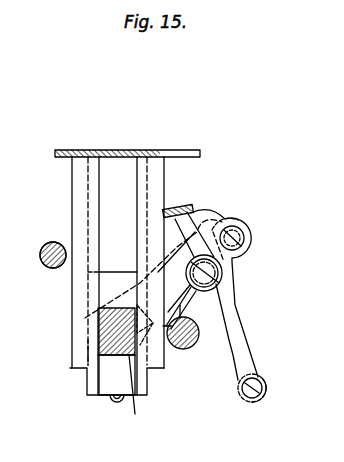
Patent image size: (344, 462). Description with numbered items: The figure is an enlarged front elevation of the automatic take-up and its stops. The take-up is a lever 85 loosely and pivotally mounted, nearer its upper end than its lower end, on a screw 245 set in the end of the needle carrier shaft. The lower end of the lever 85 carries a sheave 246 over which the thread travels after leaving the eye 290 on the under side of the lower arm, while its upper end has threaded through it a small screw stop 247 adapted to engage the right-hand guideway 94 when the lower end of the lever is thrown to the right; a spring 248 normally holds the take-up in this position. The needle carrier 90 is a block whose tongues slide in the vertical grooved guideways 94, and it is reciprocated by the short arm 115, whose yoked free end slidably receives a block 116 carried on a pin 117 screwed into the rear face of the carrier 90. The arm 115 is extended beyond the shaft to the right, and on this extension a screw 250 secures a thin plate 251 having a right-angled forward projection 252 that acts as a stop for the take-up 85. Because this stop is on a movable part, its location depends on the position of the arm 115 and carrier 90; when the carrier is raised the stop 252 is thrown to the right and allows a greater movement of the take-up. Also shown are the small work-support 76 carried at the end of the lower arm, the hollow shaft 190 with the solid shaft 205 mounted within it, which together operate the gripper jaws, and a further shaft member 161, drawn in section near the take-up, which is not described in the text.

The work-support 76 is at (143, 150).
The vertical grooved guideways 94 is at (82, 362).
The block 116 is at (98, 328).
The pin 117 is at (85, 356).
The eye 290 is at (112, 402).
The needle carrier 90 is at (141, 396).
The hollow shaft 190 is at (50, 243).
The solid shaft 205 is at (48, 266).
The shaft 161 is at (197, 357).
The short arm 115 is at (180, 349).
The screw stop 247 is at (193, 212).
The take-up lever 85 is at (240, 320).
The spring 248 is at (230, 298).
The screw 245 is at (220, 273).
The screw 250 is at (247, 235).
The thin plate 251 is at (227, 222).
The right-angled forward projection 252 is at (236, 216).
The sheave 246 is at (265, 380).